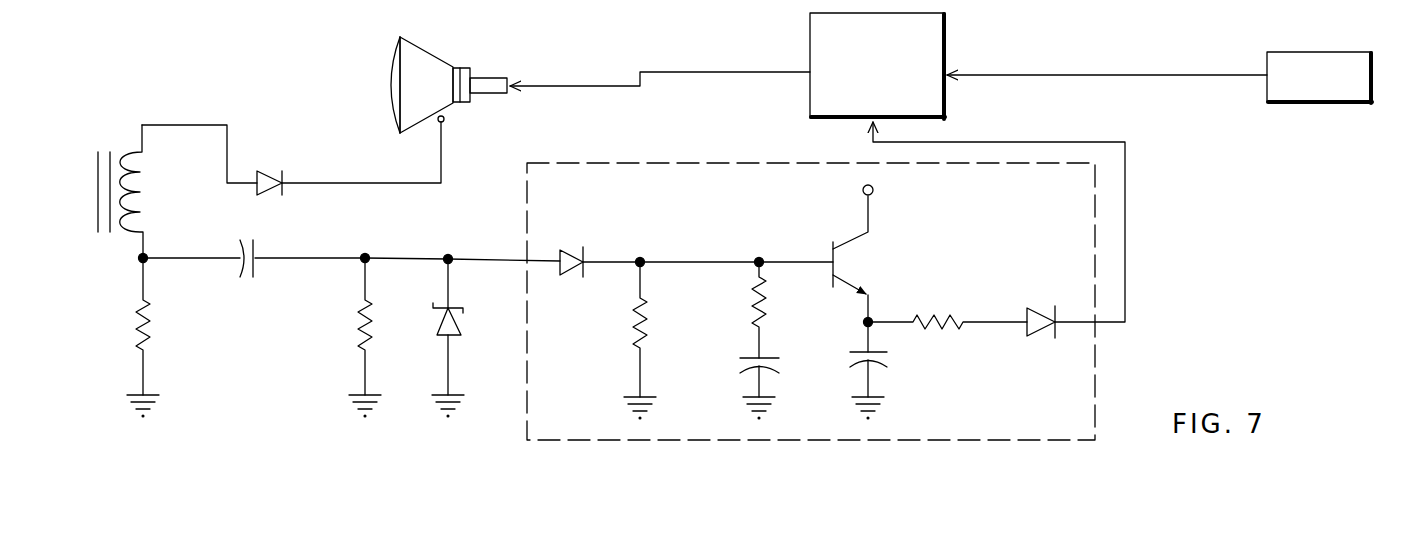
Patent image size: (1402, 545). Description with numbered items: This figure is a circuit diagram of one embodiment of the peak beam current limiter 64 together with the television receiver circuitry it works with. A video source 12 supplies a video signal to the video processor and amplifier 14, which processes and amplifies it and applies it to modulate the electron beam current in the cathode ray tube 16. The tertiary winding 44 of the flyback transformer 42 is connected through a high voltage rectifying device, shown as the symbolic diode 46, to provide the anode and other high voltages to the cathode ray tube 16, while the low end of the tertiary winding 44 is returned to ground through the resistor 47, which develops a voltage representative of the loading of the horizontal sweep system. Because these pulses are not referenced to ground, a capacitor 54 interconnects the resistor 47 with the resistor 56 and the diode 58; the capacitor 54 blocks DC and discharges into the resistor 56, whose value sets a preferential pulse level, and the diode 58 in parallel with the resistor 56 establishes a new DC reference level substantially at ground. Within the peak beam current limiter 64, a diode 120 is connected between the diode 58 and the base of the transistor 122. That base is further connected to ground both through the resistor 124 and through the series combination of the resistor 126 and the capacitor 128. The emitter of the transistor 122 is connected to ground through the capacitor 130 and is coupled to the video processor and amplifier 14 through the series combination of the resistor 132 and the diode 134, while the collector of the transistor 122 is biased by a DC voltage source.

The video source 12 is at (1304, 48).
The video processor and amplifier 14 is at (808, 33).
The cathode ray tube 16 is at (438, 46).
The flyback transformer 42 is at (96, 212).
The tertiary winding 44 is at (130, 196).
The diode 46 is at (272, 177).
The resistor 47 is at (152, 319).
The capacitor 54 is at (258, 246).
The resistor 56 is at (357, 316).
The diode 58 is at (464, 318).
The peak beam current limiter 64 is at (1058, 426).
The diode 120 is at (570, 252).
The transistor 122 is at (842, 262).
The resistor 124 is at (650, 317).
The resistor 126 is at (768, 297).
The capacitor 128 is at (772, 352).
The capacitor 130 is at (882, 344).
The resistor 132 is at (930, 314).
The diode 134 is at (1047, 326).